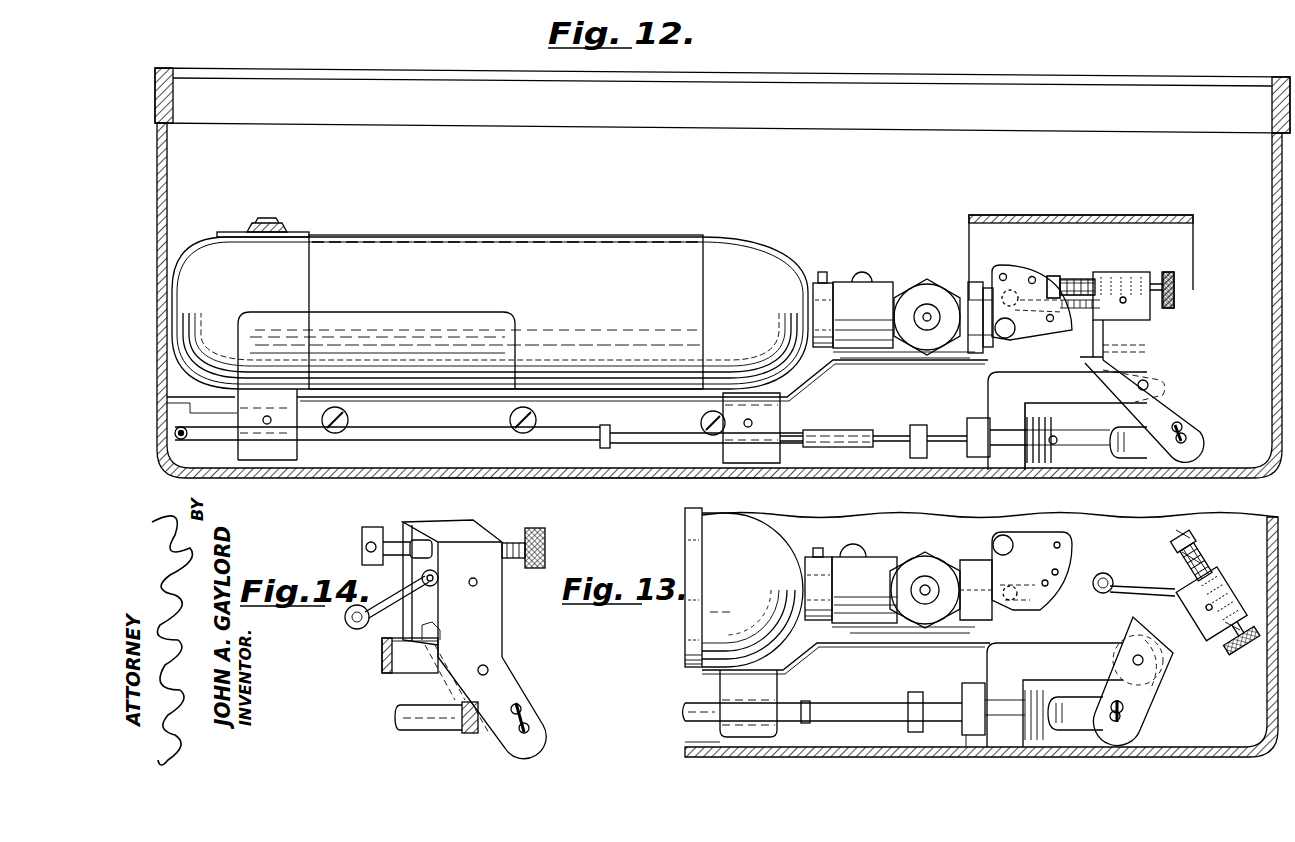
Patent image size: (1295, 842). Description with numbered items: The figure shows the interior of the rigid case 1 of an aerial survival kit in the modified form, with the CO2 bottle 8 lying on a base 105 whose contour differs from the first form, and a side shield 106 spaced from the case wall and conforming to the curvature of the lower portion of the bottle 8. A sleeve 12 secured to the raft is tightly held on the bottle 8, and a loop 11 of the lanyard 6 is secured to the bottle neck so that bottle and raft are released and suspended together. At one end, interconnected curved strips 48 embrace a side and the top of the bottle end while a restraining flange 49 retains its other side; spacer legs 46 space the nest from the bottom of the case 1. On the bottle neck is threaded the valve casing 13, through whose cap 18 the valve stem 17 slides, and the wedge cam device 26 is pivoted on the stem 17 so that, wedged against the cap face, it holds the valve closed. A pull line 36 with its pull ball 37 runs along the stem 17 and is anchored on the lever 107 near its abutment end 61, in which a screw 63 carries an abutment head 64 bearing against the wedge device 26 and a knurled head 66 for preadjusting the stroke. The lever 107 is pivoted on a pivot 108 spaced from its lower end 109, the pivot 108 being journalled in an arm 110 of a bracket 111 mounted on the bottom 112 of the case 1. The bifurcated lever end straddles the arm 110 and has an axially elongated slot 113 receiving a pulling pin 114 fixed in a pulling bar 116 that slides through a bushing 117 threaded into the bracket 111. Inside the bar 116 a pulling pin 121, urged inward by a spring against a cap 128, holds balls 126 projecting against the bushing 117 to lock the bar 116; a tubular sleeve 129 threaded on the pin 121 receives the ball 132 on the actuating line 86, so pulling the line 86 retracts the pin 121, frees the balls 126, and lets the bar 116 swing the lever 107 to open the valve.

In FIG. 12, the case 1 is at (158, 197).
In FIG. 12, the lanyard 6 is at (822, 272).
In FIG. 13, the lanyard 6 is at (821, 550).
In FIG. 12, the CO2 bottle 8 is at (735, 240).
In FIG. 13, the CO2 bottle 8 is at (740, 522).
In FIG. 12, the loop 11 is at (813, 301).
In FIG. 13, the loop 11 is at (805, 582).
In FIG. 12, the sleeve 12 is at (572, 236).
In FIG. 13, the sleeve 12 is at (685, 543).
In FIG. 12, the valve casing 13 is at (880, 285).
In FIG. 13, the valve casing 13 is at (875, 558).
In FIG. 12, the valve stem 17 is at (1040, 335).
In FIG. 13, the valve stem 17 is at (1008, 586).
In FIG. 12, the cap 18 is at (972, 282).
In FIG. 12, the wedge cam device 26 is at (1025, 265).
In FIG. 13, the wedge cam device 26 is at (1030, 532).
In FIG. 12, the pull line 36 is at (1080, 310).
In FIG. 13, the pull line 36 is at (1140, 588).
In FIG. 14, the pull line 36 is at (403, 598).
In FIG. 13, the pull ball 37 is at (1107, 575).
In FIG. 14, the pull ball 37 is at (348, 625).
In FIG. 12, the spacer legs 46 is at (235, 453).
In FIG. 12, the curved strips 48 is at (222, 232).
In FIG. 12, the restraining flange 49 is at (288, 228).
In FIG. 12, the abutment end 61 is at (1132, 272).
In FIG. 13, the abutment end 61 is at (1225, 590).
In FIG. 14, the abutment end 61 is at (470, 526).
In FIG. 12, the screw 63 is at (1077, 280).
In FIG. 13, the screw 63 is at (1200, 555).
In FIG. 14, the screw 63 is at (510, 543).
In FIG. 12, the abutment head 64 is at (1053, 275).
In FIG. 13, the abutment head 64 is at (1175, 540).
In FIG. 14, the abutment head 64 is at (362, 540).
In FIG. 12, the knurled head 66 is at (1175, 292).
In FIG. 13, the knurled head 66 is at (1228, 635).
In FIG. 12, the actuating line 86 is at (655, 440).
In FIG. 12, the base 105 is at (645, 398).
In FIG. 12, the side shield 106 is at (438, 330).
In FIG. 12, the lever 107 is at (1170, 395).
In FIG. 13, the lever 107 is at (1165, 667).
In FIG. 14, the lever 107 is at (483, 628).
In FIG. 12, the pivot 108 is at (1138, 386).
In FIG. 13, the pivot 108 is at (1142, 657).
In FIG. 14, the pivot 108 is at (488, 670).
In FIG. 12, the lower end 109 is at (1195, 447).
In FIG. 13, the lower end 109 is at (1130, 734).
In FIG. 14, the lower end 109 is at (532, 742).
In FIG. 12, the arm 110 is at (1062, 394).
In FIG. 13, the arm 110 is at (1070, 670).
In FIG. 14, the arm 110 is at (410, 677).
In FIG. 12, the bracket 111 is at (985, 415).
In FIG. 13, the bracket 111 is at (985, 690).
In FIG. 12, the bottom 112 is at (440, 478).
In FIG. 12, the slot 113 is at (1183, 427).
In FIG. 13, the slot 113 is at (1125, 705).
In FIG. 14, the slot 113 is at (524, 708).
In FIG. 12, the pulling pin 114 is at (1187, 437).
In FIG. 13, the pulling pin 114 is at (1122, 716).
In FIG. 14, the pulling pin 114 is at (531, 728).
In FIG. 12, the pulling bar 116 is at (1120, 450).
In FIG. 13, the pulling bar 116 is at (1078, 725).
In FIG. 14, the pulling bar 116 is at (432, 732).
In FIG. 13, the bushing 117 is at (975, 747).
In FIG. 12, the pulling pin 121 is at (895, 445).
In FIG. 13, the pulling pin 121 is at (835, 718).
In FIG. 12, the ball 126 is at (1055, 440).
In FIG. 12, the cap 128 is at (925, 415).
In FIG. 13, the cap 128 is at (914, 692).
In FIG. 12, the tubular sleeve 129 is at (830, 430).
In FIG. 13, the tubular sleeve 129 is at (702, 724).
In FIG. 12, the ball 132 is at (808, 447).